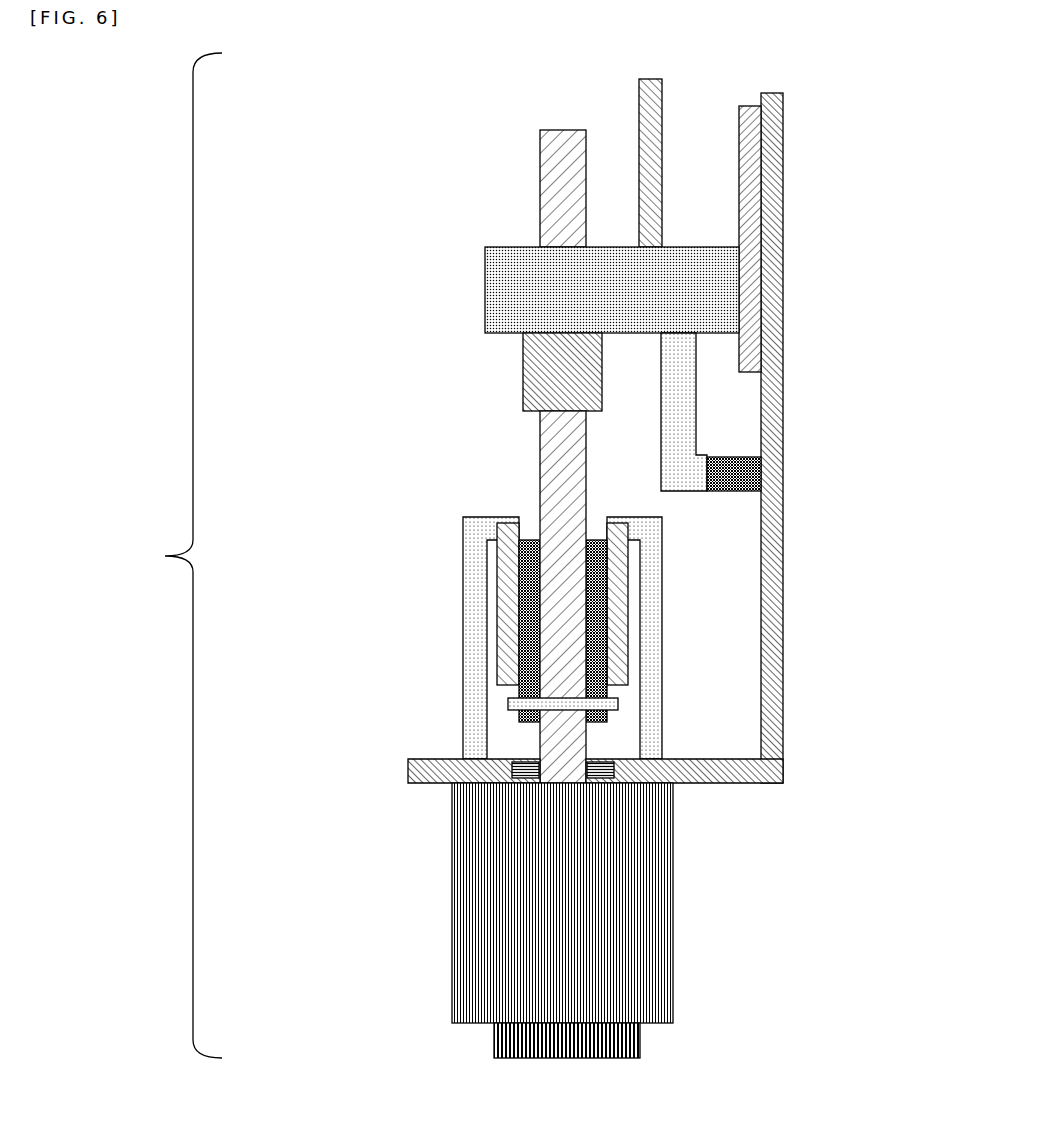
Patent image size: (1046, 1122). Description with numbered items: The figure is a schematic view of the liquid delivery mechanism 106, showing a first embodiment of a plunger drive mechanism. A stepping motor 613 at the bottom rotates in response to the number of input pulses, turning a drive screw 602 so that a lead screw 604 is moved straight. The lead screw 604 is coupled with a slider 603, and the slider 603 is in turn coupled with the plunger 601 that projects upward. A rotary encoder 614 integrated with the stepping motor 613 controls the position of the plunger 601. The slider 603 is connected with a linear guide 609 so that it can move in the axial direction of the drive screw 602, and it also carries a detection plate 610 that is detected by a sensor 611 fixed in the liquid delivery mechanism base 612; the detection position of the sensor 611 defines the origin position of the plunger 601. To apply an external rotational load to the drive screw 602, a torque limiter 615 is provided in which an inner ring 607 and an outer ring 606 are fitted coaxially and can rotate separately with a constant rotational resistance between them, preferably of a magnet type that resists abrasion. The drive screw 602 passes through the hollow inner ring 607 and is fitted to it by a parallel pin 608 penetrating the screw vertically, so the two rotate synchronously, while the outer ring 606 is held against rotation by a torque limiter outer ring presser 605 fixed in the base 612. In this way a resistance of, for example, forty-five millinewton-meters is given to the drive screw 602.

The liquid delivery mechanism 106 is at (168, 555).
The plunger 601 is at (642, 140).
The drive screw 602 is at (552, 167).
The slider 603 is at (517, 262).
The lead screw 604 is at (540, 388).
The torque limiter outer ring presser 605 is at (542, 490).
The outer ring 606 is at (503, 548).
The inner ring 607 is at (518, 628).
The parallel pin 608 is at (510, 706).
The linear guide 609 is at (752, 213).
The detection plate 610 is at (683, 430).
The sensor 611 is at (763, 475).
The liquid delivery mechanism base 612 is at (773, 662).
The stepping motor 613 is at (642, 890).
The rotary encoder 614 is at (617, 1045).
The torque limiter 615 is at (577, 625).